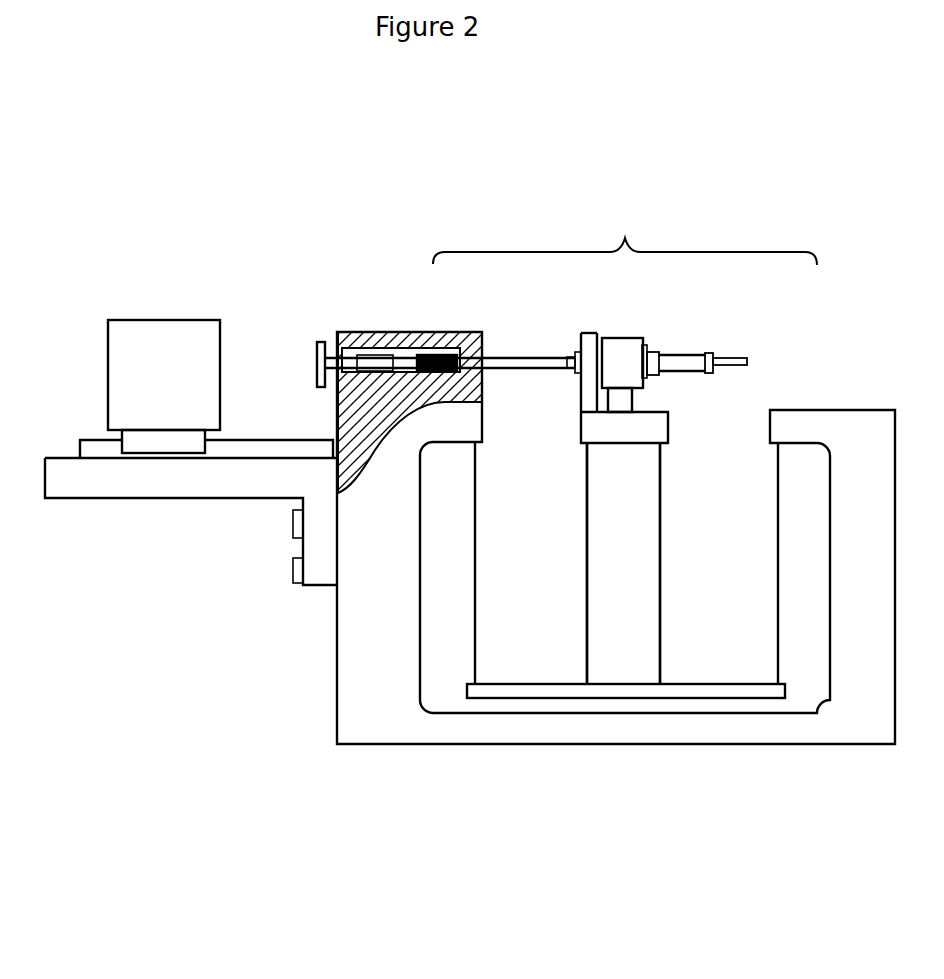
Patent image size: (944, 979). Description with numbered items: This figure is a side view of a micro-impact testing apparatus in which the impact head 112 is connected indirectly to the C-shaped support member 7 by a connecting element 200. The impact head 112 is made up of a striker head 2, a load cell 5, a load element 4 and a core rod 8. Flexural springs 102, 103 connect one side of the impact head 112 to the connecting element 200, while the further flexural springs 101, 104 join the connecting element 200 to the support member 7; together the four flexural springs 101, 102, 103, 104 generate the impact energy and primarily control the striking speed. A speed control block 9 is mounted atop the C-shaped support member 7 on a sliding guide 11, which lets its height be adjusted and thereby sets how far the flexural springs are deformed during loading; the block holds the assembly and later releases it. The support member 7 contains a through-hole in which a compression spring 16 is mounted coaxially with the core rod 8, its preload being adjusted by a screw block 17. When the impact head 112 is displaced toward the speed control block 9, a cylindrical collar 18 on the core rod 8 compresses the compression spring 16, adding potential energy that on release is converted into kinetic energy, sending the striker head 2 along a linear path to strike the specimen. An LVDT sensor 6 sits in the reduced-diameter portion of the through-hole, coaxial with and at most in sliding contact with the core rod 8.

The striker head 2 is at (760, 330).
The load element 4 is at (592, 301).
The load cell 5 is at (657, 335).
The LVDT sensor 6 is at (358, 380).
The C-shaped support member 7 is at (561, 538).
The core rod 8 is at (446, 326).
The speed control block 9 is at (144, 359).
The sliding guide 11 is at (169, 475).
The compression spring 16 is at (412, 318).
The screw block 17 is at (346, 318).
The cylindrical collar 18 is at (586, 475).
The flexural spring 101 is at (828, 660).
The flexural spring 102 is at (724, 634).
The flexural spring 103 is at (588, 674).
The flexural spring 104 is at (405, 693).
The impact head 112 is at (625, 230).
The connecting element 200 is at (618, 787).